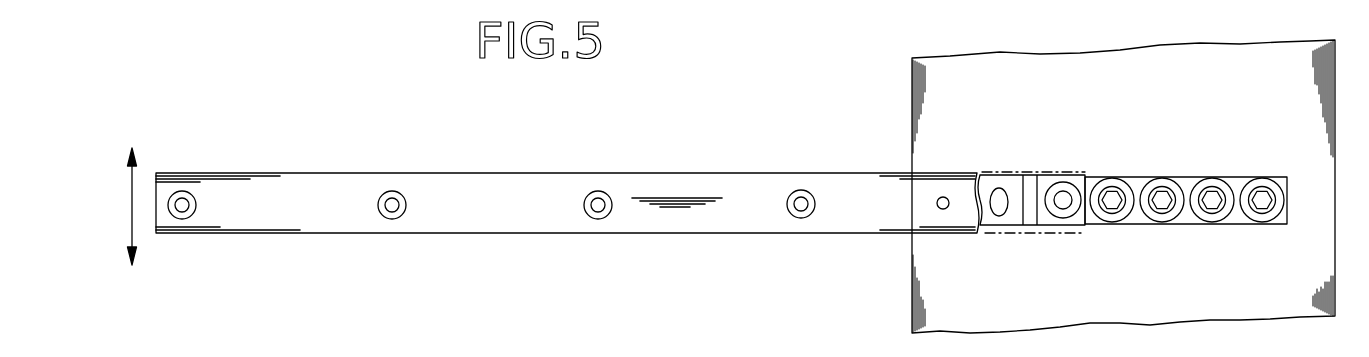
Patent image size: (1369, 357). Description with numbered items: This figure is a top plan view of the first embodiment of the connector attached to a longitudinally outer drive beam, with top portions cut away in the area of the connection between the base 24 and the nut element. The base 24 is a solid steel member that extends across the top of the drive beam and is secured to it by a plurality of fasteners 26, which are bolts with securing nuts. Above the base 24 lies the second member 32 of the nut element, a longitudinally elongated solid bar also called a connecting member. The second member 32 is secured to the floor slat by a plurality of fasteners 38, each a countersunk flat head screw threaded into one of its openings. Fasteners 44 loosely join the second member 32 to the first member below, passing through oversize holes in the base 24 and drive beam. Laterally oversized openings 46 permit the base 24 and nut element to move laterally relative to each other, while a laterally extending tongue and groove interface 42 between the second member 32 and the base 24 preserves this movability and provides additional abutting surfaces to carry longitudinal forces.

The base 24 is at (1184, 215).
The fasteners 26 is at (1102, 215).
The second member 32 is at (646, 235).
The fasteners 38 is at (184, 203).
The tongue and groove interface 42 is at (1028, 158).
The fasteners 44 is at (943, 210).
The openings 46 is at (999, 188).